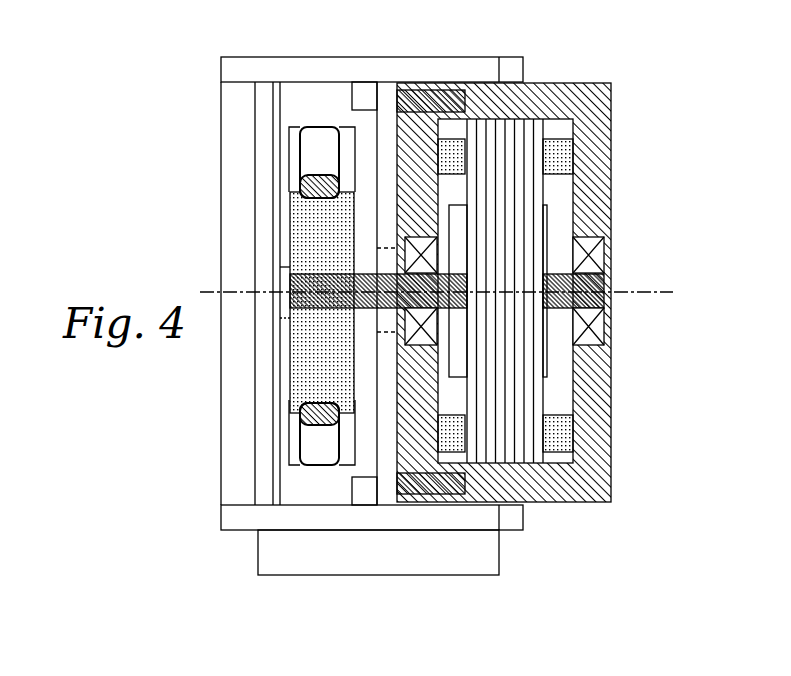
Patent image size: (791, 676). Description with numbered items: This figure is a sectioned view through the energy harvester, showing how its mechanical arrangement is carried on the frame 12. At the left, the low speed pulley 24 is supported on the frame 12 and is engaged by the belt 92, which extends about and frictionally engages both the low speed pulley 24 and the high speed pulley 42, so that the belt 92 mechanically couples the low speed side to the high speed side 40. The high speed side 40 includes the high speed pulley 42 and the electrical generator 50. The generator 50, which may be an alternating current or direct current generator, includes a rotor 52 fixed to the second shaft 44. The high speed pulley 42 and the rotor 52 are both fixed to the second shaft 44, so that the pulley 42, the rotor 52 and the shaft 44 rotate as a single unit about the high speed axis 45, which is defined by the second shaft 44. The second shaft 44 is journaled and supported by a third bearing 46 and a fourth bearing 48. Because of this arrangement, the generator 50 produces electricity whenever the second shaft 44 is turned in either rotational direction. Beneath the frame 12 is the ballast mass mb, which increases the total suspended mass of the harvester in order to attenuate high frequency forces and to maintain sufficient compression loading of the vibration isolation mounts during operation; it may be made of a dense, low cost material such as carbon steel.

The frame 12 is at (346, 70).
The low speed pulley 24 is at (297, 155).
The high speed side 40 is at (606, 62).
The high speed pulley 42 is at (310, 245).
The second shaft 44 is at (320, 308).
The high speed axis 45 is at (655, 291).
The third bearing 46 is at (423, 337).
The fourth bearing 48 is at (600, 328).
The electrical generator 50 is at (600, 403).
The rotor 52 is at (458, 365).
The belt 92 is at (318, 127).
The ballast mass mb is at (278, 553).